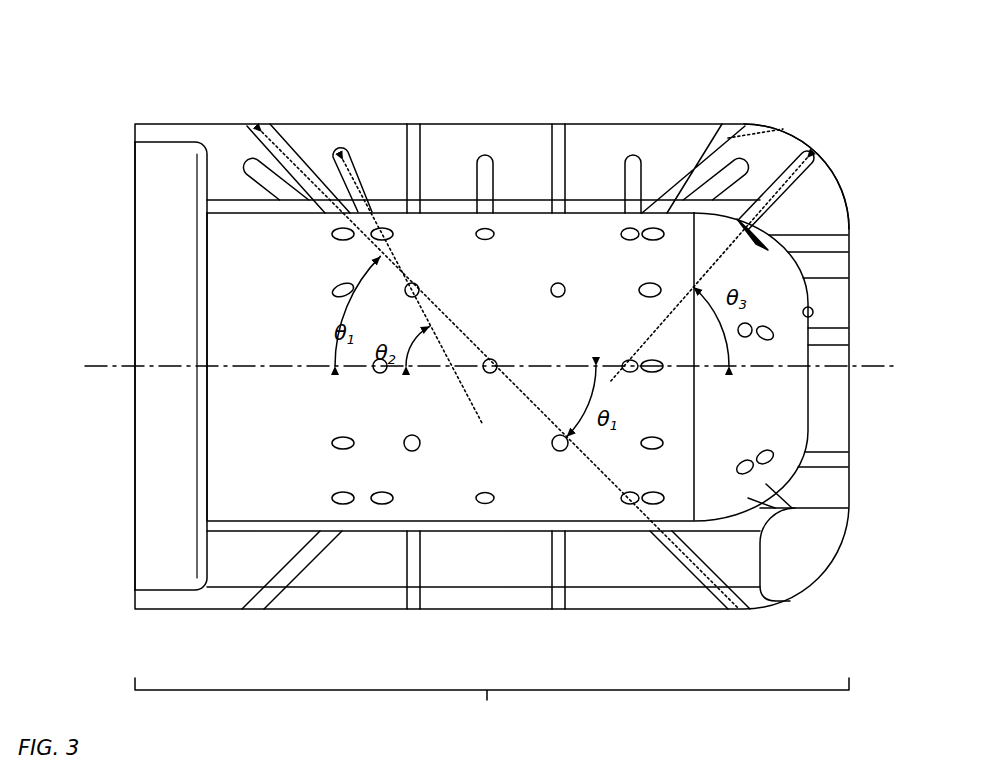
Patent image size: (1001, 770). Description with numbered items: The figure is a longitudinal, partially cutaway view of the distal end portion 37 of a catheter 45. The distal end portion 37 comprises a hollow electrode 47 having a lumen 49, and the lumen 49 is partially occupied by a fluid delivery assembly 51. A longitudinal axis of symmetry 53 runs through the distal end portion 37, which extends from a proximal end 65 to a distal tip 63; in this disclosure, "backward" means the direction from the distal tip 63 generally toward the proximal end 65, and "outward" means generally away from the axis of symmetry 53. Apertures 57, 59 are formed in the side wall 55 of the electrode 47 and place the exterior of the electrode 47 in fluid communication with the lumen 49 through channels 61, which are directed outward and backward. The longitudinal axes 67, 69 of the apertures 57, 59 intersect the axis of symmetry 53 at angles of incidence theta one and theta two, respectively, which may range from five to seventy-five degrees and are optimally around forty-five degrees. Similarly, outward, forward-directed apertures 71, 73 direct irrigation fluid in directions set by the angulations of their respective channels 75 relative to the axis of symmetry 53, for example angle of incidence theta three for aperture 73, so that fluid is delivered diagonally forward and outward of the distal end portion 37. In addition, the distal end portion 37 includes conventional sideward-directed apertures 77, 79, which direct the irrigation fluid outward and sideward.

The distal end portion 37 is at (492, 704).
The catheter 45 is at (76, 125).
The hollow electrode 47 is at (864, 250).
The lumen 49 is at (740, 212).
The fluid delivery assembly 51 is at (510, 367).
The longitudinal axis of symmetry 53 is at (96, 376).
The side wall 55 is at (220, 152).
The aperture 57 is at (250, 125).
The aperture 59 is at (347, 152).
The channels 61 is at (248, 168).
The distal tip 63 is at (850, 324).
The proximal end 65 is at (133, 246).
The longitudinal axis 67 is at (455, 318).
The longitudinal axis 69 is at (426, 328).
The aperture 71 is at (728, 136).
The aperture 73 is at (812, 160).
The channels 75 is at (752, 162).
The aperture 77 is at (413, 611).
The aperture 79 is at (563, 611).